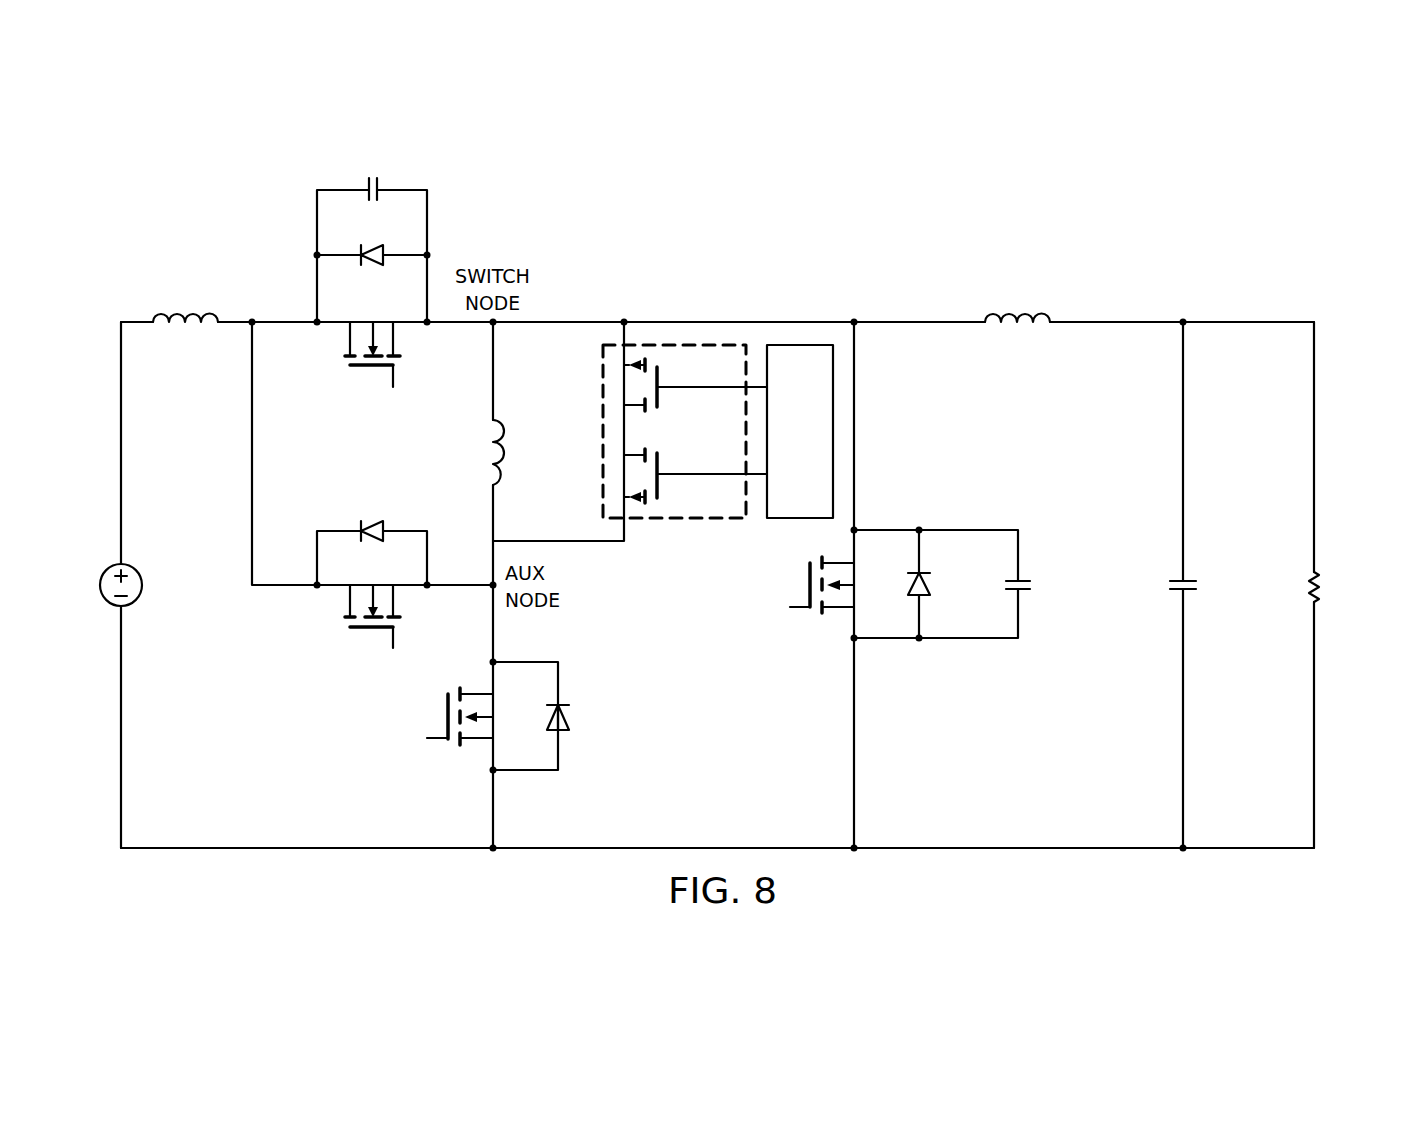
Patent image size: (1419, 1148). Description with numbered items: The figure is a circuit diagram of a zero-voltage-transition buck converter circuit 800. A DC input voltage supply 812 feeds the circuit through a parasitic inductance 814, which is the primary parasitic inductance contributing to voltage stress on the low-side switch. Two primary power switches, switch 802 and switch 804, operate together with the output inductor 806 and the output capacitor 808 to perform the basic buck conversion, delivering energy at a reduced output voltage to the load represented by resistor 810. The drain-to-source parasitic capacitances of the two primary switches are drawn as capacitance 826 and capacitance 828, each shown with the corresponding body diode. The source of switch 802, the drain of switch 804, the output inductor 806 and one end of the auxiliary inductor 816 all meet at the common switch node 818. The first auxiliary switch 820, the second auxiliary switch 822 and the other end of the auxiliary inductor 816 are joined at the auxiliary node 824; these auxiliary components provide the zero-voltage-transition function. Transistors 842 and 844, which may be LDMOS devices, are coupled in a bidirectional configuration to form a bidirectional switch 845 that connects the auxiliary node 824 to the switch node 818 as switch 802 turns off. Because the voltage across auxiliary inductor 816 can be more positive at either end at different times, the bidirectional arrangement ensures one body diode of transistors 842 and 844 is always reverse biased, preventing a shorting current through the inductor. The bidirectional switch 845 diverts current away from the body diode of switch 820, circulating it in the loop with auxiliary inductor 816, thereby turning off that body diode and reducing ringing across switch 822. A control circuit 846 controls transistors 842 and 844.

The circuit 800 is at (991, 178).
The switch S1 802 is at (360, 370).
The switch S2 804 is at (807, 575).
The output inductor Lo 806 is at (1046, 306).
The capacitor Co 808 is at (1197, 586).
The resistor Ro 810 is at (1320, 587).
The input voltage supply Vin 812 is at (108, 600).
The parasitic inductance Lbyp 814 is at (157, 305).
The auxiliary inductor La 816 is at (512, 430).
The switch node 818 is at (492, 326).
The first auxiliary switch Sa1 820 is at (360, 632).
The second auxiliary switch Sa2 822 is at (447, 707).
The auxiliary node 824 is at (492, 582).
The capacitance Cds1 826 is at (372, 178).
The capacitance Cds2 828 is at (1023, 585).
The transistor 842 is at (661, 377).
The transistor 844 is at (661, 463).
The bidirectional switch 845 is at (656, 527).
The control circuit 846 is at (820, 447).